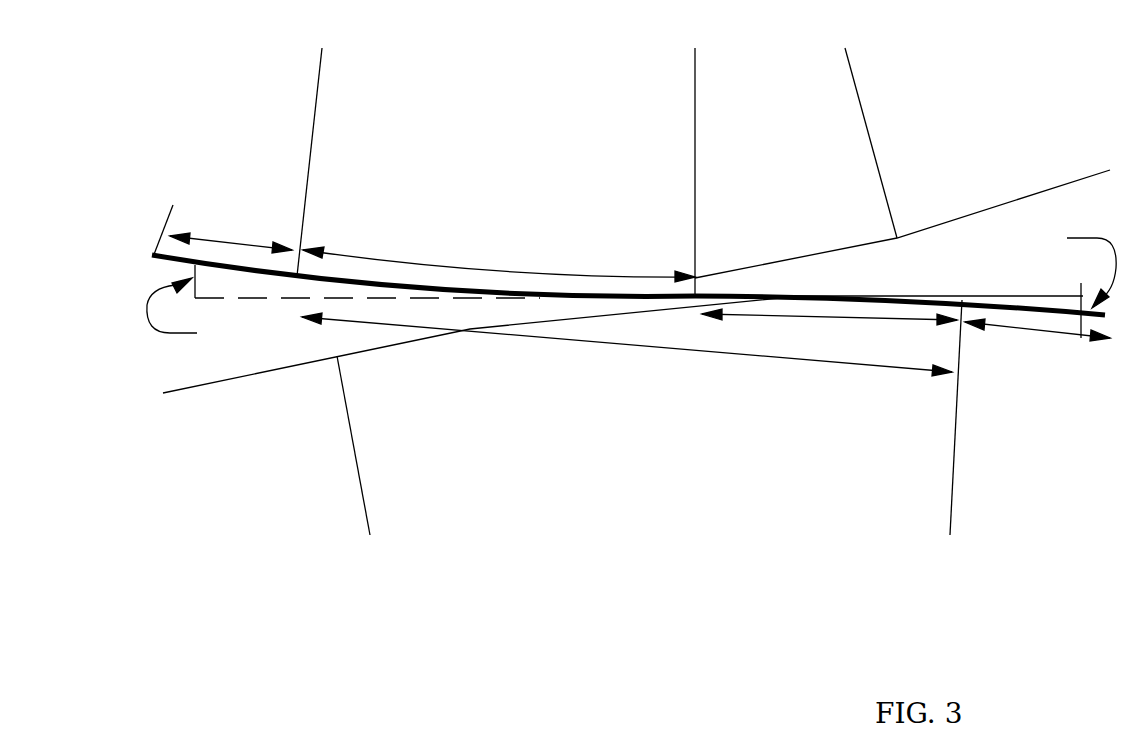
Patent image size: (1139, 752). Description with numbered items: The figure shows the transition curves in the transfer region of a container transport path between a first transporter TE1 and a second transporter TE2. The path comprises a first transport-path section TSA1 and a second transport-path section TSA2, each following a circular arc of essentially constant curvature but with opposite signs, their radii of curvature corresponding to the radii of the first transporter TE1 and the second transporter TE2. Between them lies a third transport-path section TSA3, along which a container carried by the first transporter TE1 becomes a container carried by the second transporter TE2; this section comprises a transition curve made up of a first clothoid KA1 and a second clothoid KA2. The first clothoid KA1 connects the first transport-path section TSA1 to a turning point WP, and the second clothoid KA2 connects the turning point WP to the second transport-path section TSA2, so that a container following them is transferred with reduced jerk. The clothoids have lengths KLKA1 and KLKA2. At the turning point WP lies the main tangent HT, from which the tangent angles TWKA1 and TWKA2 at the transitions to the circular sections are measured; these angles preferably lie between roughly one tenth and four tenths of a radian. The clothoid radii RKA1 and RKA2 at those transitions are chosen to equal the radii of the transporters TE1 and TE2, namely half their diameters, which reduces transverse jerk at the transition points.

The first clothoid KA1 is at (383, 270).
The second clothoid KA2 is at (768, 283).
The turning point WP is at (700, 285).
The first transporter TE1 is at (902, 163).
The second transporter TE2 is at (424, 416).
The clothoid radius of first clothoid RKA1 is at (248, 162).
The clothoid radius of second clothoid RKA2 is at (1017, 417).
The main tangent HT is at (639, 341).
The first transport-path section TSA1 is at (231, 226).
The second transport-path section TSA2 is at (1037, 349).
The third transport-path section TSA3 is at (627, 355).
The length of first clothoid KLKA1 is at (499, 259).
The length of second clothoid KLKA2 is at (829, 332).
The tangent angle of first clothoid TWKA1 is at (211, 315).
The tangent angle of second clothoid TWKA2 is at (1045, 269).